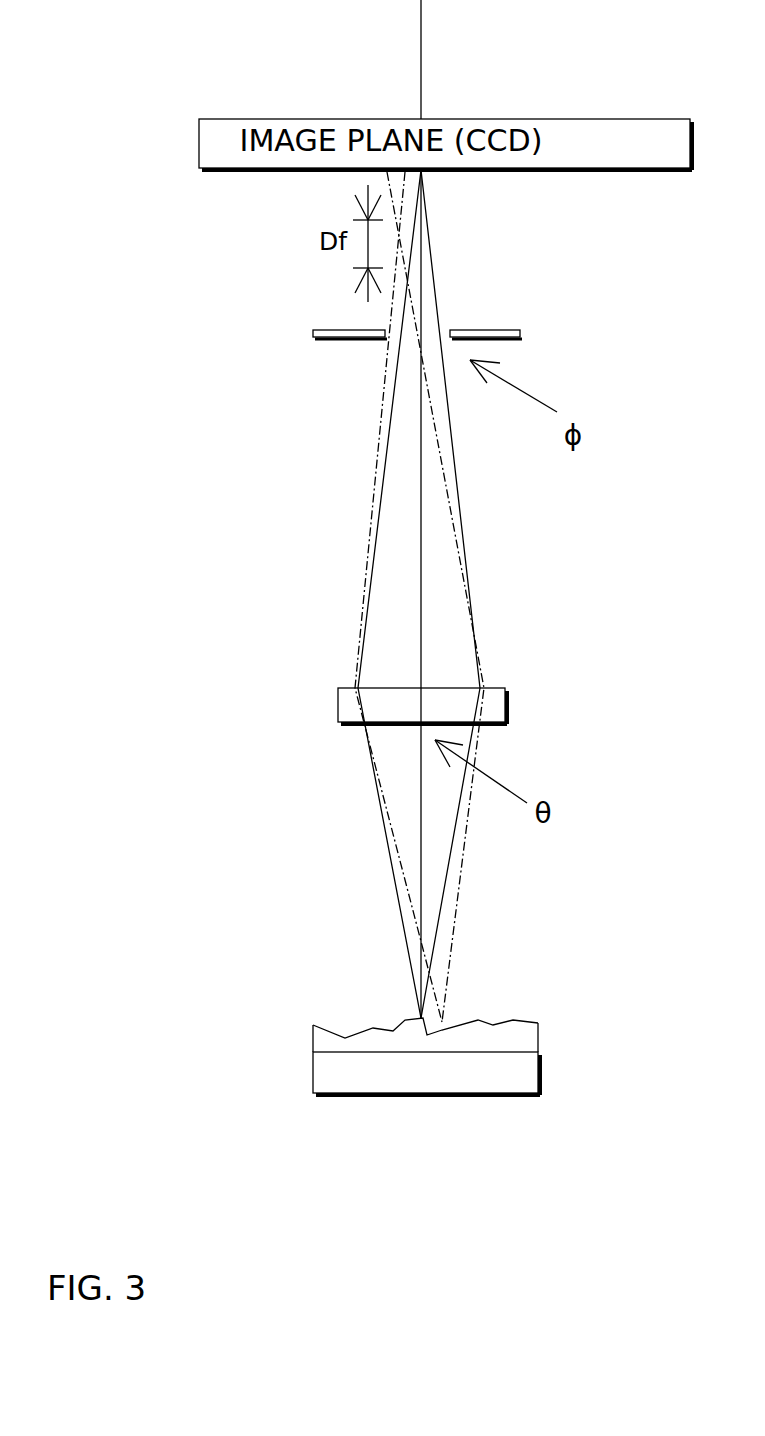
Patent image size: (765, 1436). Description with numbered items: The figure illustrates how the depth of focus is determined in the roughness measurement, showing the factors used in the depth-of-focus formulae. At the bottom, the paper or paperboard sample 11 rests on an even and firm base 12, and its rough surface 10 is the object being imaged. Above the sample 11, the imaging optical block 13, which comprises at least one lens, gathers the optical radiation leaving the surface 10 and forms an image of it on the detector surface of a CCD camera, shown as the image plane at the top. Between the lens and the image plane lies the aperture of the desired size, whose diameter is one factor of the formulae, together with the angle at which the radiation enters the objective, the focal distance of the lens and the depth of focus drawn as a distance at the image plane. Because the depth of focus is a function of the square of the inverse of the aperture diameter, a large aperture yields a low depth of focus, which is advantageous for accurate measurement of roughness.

The surface 10 is at (512, 1020).
The sample 11 is at (538, 1038).
The base 12 is at (313, 1073).
The imaging optical block 13 is at (338, 703).